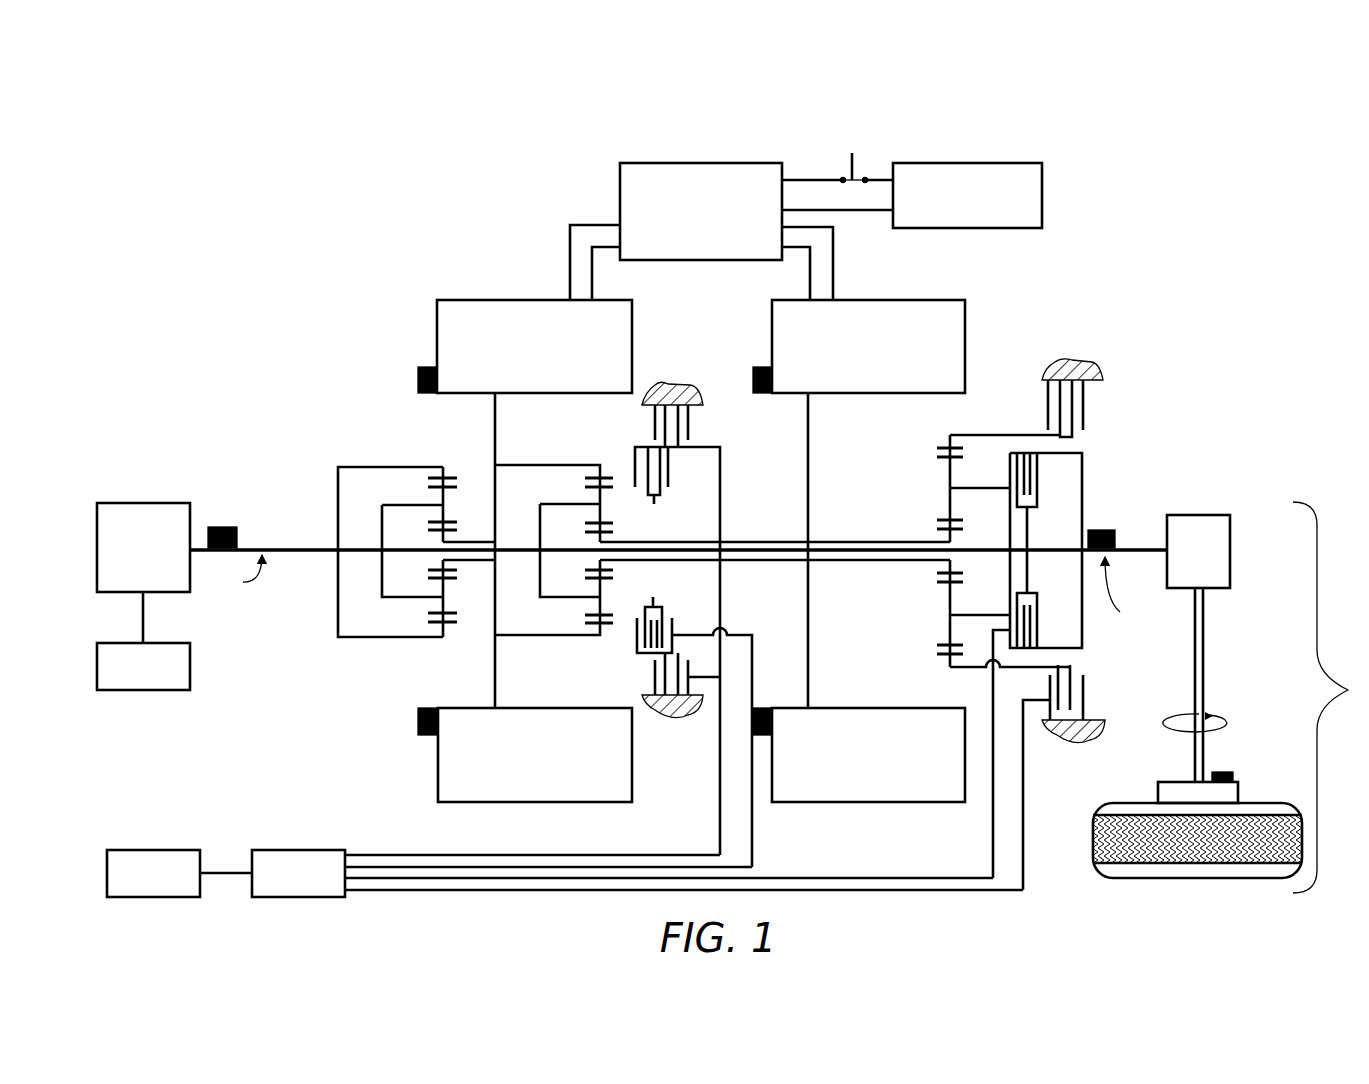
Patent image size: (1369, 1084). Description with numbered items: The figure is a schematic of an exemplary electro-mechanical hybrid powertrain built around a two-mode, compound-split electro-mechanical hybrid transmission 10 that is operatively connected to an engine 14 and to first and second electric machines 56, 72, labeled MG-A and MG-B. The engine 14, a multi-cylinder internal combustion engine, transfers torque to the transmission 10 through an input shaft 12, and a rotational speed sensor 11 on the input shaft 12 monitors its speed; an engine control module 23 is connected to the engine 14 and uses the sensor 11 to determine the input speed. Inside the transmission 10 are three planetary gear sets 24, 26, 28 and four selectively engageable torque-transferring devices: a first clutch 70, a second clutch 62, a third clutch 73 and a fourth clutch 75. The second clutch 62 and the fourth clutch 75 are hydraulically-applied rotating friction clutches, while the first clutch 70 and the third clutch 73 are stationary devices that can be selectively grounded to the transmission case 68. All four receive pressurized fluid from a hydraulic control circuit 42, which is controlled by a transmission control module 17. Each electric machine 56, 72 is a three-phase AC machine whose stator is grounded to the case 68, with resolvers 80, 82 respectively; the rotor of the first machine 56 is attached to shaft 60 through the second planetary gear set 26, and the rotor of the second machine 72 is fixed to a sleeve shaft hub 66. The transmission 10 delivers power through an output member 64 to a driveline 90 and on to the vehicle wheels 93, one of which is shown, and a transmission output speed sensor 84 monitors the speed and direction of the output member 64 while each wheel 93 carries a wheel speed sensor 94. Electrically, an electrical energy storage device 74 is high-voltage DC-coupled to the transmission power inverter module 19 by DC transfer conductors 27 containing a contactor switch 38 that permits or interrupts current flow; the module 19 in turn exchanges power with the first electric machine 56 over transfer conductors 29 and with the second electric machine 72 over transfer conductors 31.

The electro-mechanical hybrid transmission 10 is at (400, 262).
The rotational speed sensor 11 is at (222, 525).
The input shaft 12 is at (300, 547).
The engine 14 is at (150, 502).
The transmission control module 17 is at (143, 848).
The transmission power inverter module 19 is at (620, 180).
The engine control module 23 is at (190, 688).
The first planetary gear set 24 is at (440, 462).
The second planetary gear set 26 is at (597, 462).
The DC transfer conductors 27 is at (800, 178).
The third planetary gear set 28 is at (940, 432).
The transfer conductors 29 is at (569, 262).
The transfer conductors 31 is at (834, 258).
The contactor switch 38 is at (860, 165).
The hydraulic control circuit 42 is at (267, 848).
The first electric machine 56 is at (437, 333).
The shaft 60 is at (1002, 547).
The clutch C2 62 is at (1042, 492).
The output member 64 is at (1137, 547).
The sleeve shaft hub 66 is at (843, 540).
The transmission case 68 is at (672, 384).
The clutch C1 70 is at (1038, 402).
The second electric machine 72 is at (965, 317).
The clutch C3 73 is at (692, 428).
The electrical energy storage device 74 is at (1042, 185).
The clutch C4 75 is at (674, 478).
The resolver 80 is at (416, 376).
The resolver 82 is at (760, 365).
The transmission output speed sensor 84 is at (1102, 528).
The driveline 90 is at (1225, 697).
The vehicle wheel 93 is at (1158, 795).
The wheel speed sensor 94 is at (1222, 770).